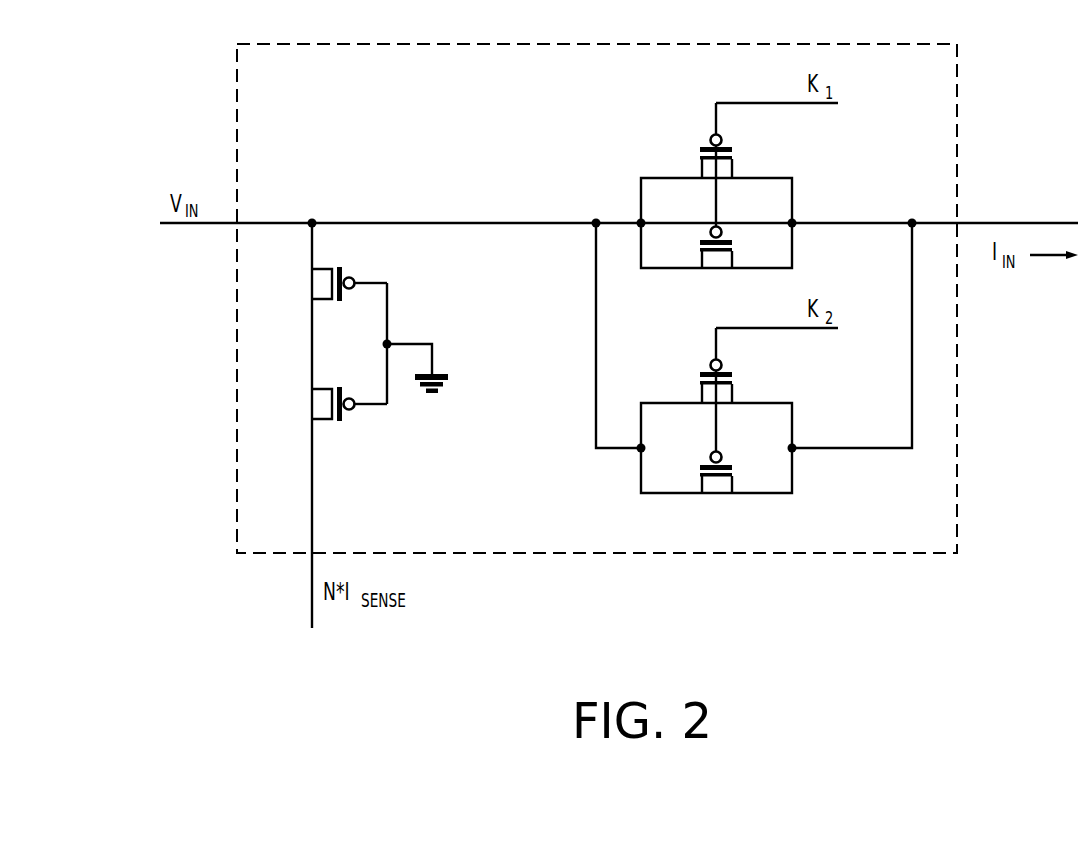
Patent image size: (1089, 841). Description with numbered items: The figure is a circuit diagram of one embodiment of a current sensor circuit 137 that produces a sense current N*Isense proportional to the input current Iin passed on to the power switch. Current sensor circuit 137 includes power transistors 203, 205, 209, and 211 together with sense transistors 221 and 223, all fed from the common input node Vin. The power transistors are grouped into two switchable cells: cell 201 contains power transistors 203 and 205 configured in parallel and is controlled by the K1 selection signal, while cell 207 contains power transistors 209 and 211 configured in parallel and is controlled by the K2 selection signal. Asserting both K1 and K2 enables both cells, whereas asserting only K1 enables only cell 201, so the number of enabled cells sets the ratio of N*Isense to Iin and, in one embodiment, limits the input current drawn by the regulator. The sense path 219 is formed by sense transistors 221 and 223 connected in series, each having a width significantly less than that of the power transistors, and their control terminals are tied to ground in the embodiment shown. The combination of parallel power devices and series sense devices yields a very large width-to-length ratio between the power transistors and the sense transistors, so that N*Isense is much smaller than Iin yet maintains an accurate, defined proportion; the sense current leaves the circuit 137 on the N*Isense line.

The current sensor circuit 137 is at (1011, 92).
The cell 201 is at (755, 203).
The power transistor 203 is at (700, 148).
The power transistor 205 is at (716, 252).
The cell 207 is at (754, 375).
The power transistor 209 is at (700, 373).
The power transistor 211 is at (716, 477).
The sense transistor arrangement 219 is at (373, 331).
The sense transistor 221 is at (324, 285).
The sense transistor 223 is at (324, 405).